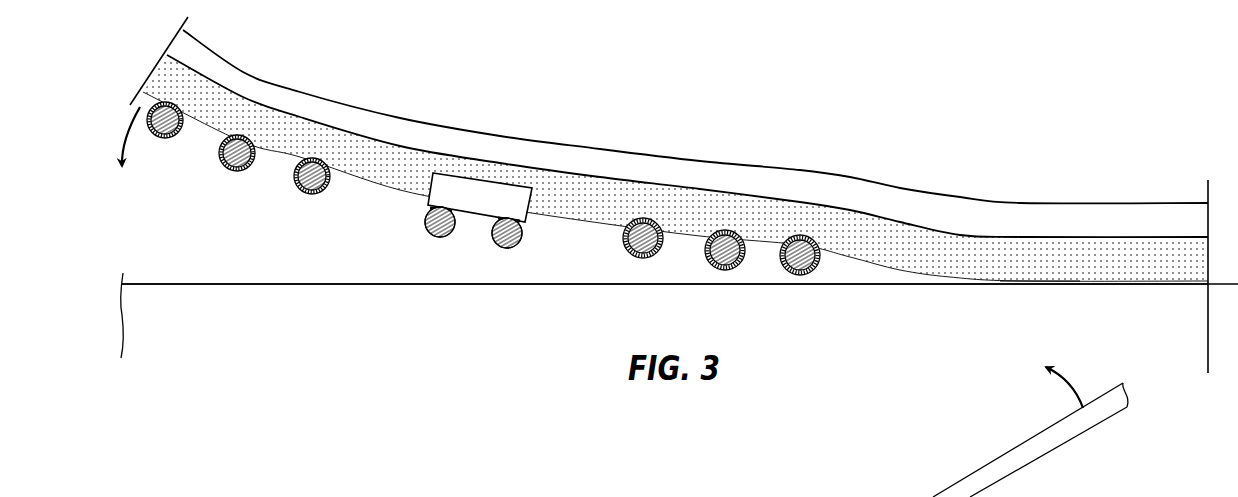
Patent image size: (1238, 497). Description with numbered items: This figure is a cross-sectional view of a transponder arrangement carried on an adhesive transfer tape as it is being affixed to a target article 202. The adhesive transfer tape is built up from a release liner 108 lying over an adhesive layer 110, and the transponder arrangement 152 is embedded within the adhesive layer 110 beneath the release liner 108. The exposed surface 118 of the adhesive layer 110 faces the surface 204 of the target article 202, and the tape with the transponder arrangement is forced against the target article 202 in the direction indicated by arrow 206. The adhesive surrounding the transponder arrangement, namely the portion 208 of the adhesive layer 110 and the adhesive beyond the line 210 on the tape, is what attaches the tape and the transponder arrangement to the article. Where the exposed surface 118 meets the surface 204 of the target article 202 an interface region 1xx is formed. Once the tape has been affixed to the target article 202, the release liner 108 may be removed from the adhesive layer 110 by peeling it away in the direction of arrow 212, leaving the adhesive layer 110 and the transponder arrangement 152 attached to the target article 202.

The release liner 108 is at (1065, 228).
The adhesive layer 110 is at (1081, 267).
The exposed surface 118 is at (402, 186).
The applicator head 152 is at (497, 211).
The target article 202 is at (662, 319).
The surface 204 is at (248, 282).
The arrow 206 is at (130, 166).
The portion 208 is at (1132, 270).
The line 210 is at (160, 63).
The arrow 212 is at (1071, 379).
The interface region 1xx is at (1038, 284).